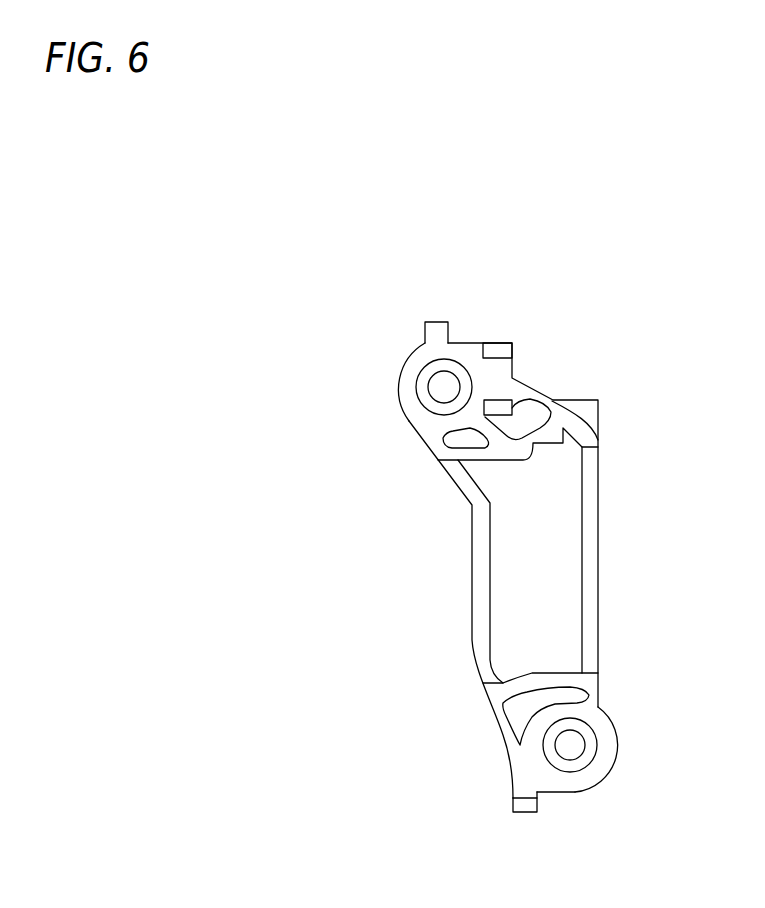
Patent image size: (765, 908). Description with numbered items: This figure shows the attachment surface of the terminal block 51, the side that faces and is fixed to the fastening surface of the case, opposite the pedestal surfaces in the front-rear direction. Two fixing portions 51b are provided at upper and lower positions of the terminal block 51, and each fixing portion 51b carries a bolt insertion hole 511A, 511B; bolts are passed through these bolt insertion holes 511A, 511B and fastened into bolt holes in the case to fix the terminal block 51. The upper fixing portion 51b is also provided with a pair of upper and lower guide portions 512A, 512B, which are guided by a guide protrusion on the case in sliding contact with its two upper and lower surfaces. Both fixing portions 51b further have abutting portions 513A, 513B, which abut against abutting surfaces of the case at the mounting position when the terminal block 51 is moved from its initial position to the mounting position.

The terminal block 51 is at (512, 296).
The fixing portion 51b is at (400, 370).
The bolt insertion hole 511A is at (433, 382).
The bolt insertion hole 511B is at (587, 748).
The guide portion 512A is at (513, 350).
The guide portion 512B is at (527, 410).
The abutting portion 513A is at (425, 332).
The abutting portion 513B is at (513, 800).